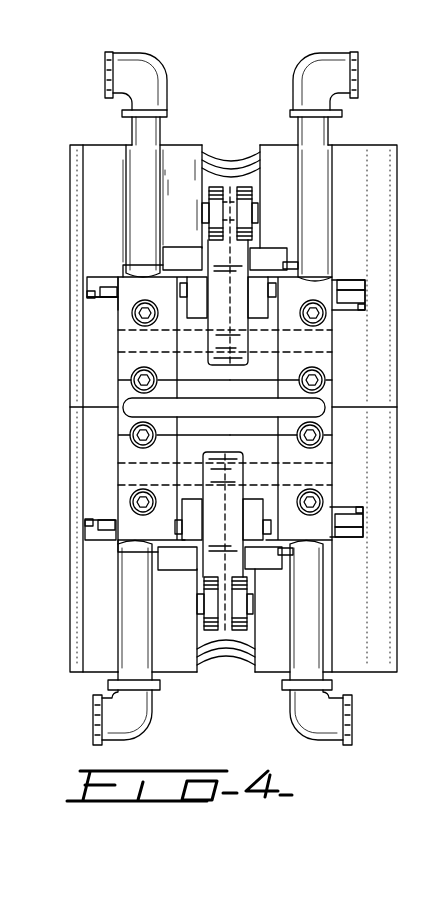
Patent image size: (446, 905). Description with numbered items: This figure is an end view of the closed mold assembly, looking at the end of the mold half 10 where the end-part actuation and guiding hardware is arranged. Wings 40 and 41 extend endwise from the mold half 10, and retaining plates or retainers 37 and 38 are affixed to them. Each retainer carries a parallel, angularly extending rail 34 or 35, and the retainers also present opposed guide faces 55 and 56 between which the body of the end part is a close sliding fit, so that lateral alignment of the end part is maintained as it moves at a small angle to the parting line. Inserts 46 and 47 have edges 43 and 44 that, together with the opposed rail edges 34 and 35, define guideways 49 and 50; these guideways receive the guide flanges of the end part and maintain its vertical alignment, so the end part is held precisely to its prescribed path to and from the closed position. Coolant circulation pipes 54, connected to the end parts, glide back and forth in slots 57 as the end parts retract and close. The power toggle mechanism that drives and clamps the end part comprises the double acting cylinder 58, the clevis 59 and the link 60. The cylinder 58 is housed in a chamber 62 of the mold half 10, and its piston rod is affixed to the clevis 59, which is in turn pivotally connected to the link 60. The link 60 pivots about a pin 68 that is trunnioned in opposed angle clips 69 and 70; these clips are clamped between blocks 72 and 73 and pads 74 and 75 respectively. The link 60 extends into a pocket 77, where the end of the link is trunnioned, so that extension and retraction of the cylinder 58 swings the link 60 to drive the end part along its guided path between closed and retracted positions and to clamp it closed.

The mold half 10 is at (62, 243).
The rail 34 is at (110, 292).
The rail 35 is at (363, 300).
The retaining plate 37 is at (100, 378).
The retaining plate 38 is at (367, 360).
The wing 40 is at (88, 220).
The wing 41 is at (383, 265).
The edge 43 is at (110, 293).
The edge 44 is at (347, 287).
The insert 46 is at (93, 283).
The insert 47 is at (365, 285).
The guideway 49 is at (88, 303).
The guideway 50 is at (362, 308).
The coolant circulation pipe 54 is at (150, 163).
The guide face 55 is at (132, 362).
The guide face 56 is at (332, 360).
The slot 57 is at (153, 207).
The double acting cylinder 58 is at (223, 163).
The clevis 59 is at (240, 196).
The link 60 is at (216, 261).
The chamber 62 is at (252, 150).
The pin 68 is at (268, 292).
The angle clip 69 is at (186, 255).
The angle clip 70 is at (268, 253).
The block 72 is at (170, 200).
The block 73 is at (287, 202).
The pad 74 is at (173, 272).
The pad 75 is at (283, 273).
The pocket 77 is at (245, 343).